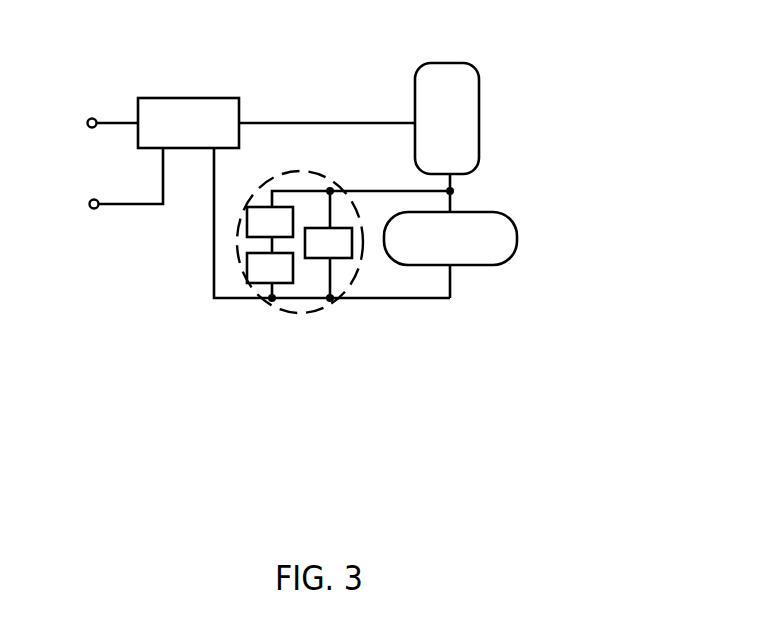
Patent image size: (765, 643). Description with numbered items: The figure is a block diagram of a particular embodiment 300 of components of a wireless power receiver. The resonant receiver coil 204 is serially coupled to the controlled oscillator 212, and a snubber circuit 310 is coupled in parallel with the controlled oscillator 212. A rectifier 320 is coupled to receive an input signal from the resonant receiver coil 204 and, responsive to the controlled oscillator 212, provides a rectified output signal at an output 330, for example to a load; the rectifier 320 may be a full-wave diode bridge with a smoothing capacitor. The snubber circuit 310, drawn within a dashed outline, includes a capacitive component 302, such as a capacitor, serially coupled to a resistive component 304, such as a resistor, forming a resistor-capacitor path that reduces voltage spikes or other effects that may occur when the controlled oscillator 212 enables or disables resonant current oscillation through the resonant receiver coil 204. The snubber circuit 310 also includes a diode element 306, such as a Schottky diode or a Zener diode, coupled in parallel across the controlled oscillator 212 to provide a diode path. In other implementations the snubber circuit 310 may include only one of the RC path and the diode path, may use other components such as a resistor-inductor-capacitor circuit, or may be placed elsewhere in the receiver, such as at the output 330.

The embodiment of receiver components 300 is at (558, 53).
The rectifier 320 is at (210, 98).
The resonant receiver coil 204 is at (445, 63).
The controlled oscillator 212 is at (490, 212).
The snubber circuit 310 is at (298, 330).
The capacitive component 302 is at (247, 221).
The resistive component 304 is at (247, 268).
The diode element 306 is at (352, 258).
The output 330 is at (89, 234).